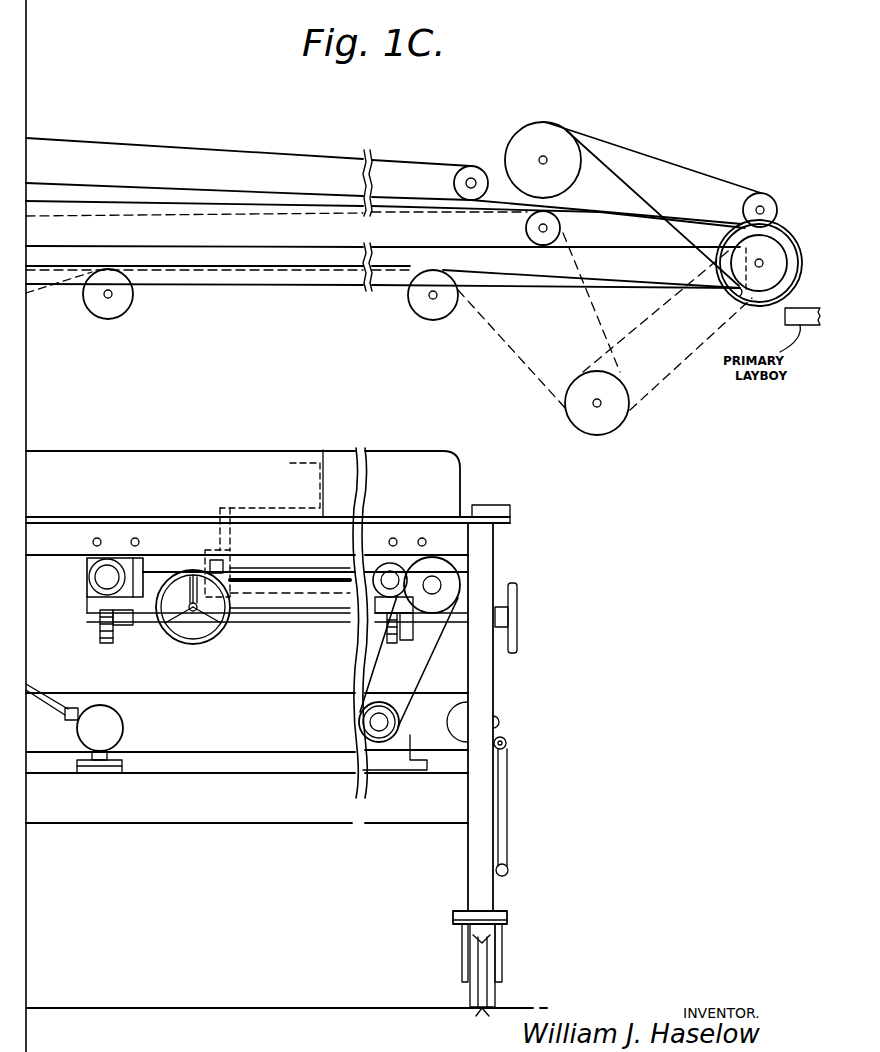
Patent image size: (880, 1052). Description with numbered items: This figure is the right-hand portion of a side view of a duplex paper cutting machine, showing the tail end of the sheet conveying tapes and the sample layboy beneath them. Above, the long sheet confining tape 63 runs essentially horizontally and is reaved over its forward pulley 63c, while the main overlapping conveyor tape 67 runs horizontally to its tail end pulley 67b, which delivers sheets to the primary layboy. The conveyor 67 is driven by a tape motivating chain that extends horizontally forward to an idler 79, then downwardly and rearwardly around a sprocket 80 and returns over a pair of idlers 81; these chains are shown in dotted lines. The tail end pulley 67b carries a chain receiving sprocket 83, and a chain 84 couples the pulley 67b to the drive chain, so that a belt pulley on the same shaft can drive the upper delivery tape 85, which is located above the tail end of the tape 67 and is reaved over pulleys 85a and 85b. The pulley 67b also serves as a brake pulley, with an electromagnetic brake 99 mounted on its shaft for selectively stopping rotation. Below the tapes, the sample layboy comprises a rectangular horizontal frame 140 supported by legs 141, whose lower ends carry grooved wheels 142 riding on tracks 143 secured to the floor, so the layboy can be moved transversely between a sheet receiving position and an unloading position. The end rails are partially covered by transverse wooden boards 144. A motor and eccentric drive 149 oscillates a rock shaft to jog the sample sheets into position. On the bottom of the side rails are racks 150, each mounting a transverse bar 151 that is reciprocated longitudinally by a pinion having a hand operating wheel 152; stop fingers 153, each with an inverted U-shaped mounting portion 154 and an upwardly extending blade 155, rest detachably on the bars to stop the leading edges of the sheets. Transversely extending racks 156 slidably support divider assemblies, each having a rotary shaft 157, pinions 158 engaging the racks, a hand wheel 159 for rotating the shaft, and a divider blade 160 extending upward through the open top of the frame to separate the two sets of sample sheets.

The sheet confining tape 63 is at (193, 150).
The pulley 63c is at (455, 183).
The main overlapping conveyor tape 67 is at (110, 203).
The tail end pulley 67b is at (753, 300).
The idler 79 is at (525, 228).
The sprocket 80 is at (605, 427).
The idlers 81 is at (122, 304).
The chain receiving sprocket 83 is at (775, 250).
The chain 84 is at (673, 380).
The upper delivery tape 85 is at (645, 148).
The pulley 85a is at (530, 133).
The pulley 85b is at (743, 207).
The brake 99 is at (780, 230).
The frame 140 is at (452, 532).
The legs 141 is at (487, 887).
The grooved wheels 142 is at (477, 992).
The tracks 143 is at (475, 1013).
The transverse wooden boards 144 is at (510, 510).
The motor and eccentric drive 149 is at (108, 720).
The racks 150 is at (262, 573).
The bar 151 is at (223, 570).
The hand operating wheel 152 is at (200, 640).
The stop fingers 153 is at (230, 508).
The inverted U-shaped mounting portion 154 is at (237, 555).
The blade 155 is at (203, 535).
The transversely extending racks 156 is at (90, 613).
The rotary shaft 157 is at (290, 615).
The pinions 158 is at (105, 643).
The hand wheel 159 is at (513, 612).
The divider blade 160 is at (162, 491).